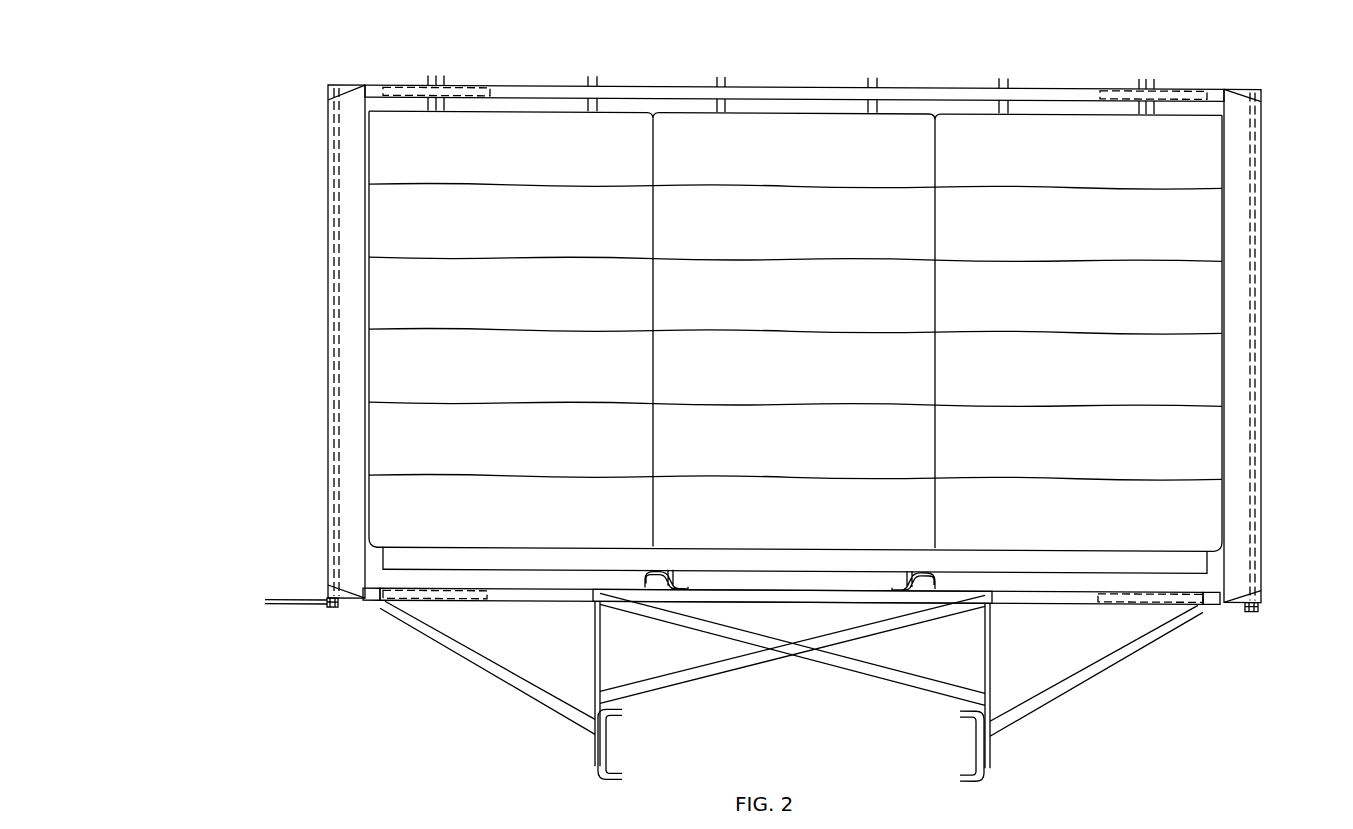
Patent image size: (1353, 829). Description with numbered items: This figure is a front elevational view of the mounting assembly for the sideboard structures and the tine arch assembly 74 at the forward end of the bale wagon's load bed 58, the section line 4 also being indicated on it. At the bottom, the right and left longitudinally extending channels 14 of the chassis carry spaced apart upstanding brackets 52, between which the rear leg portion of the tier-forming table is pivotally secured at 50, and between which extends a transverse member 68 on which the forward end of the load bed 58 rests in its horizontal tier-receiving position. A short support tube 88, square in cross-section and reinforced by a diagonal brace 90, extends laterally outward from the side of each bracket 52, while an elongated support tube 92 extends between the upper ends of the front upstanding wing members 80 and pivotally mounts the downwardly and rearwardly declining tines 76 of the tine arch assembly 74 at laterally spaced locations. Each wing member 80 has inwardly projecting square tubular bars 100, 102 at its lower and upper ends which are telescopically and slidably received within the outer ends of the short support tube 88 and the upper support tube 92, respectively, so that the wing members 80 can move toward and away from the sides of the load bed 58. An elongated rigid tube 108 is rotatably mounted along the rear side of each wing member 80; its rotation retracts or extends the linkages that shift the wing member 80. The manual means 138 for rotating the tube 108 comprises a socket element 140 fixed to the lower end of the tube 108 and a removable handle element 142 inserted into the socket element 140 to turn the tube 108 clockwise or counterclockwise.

The section line 4- 4 is at (420, 557).
The longitudinally extending channel 14 is at (604, 736).
The pivot 50 is at (593, 603).
The upstanding bracket 52 is at (595, 660).
The load-carrying bed 58 is at (990, 574).
The transverse member 68 is at (750, 590).
The tine arch assembly 74 is at (923, 78).
The tine 76 is at (590, 74).
The front upstanding wing member 80 is at (328, 315).
The short support tube 88 is at (497, 601).
The diagonal brace 90 is at (497, 665).
The elongated support tube 92 is at (665, 85).
The lower tubular bar 100 is at (378, 601).
The upper tubular bar 102 is at (375, 86).
The elongated rigid tube 108 is at (334, 452).
The manual means 138 is at (318, 624).
The socket element 140 is at (333, 610).
The handle element 142 is at (268, 604).